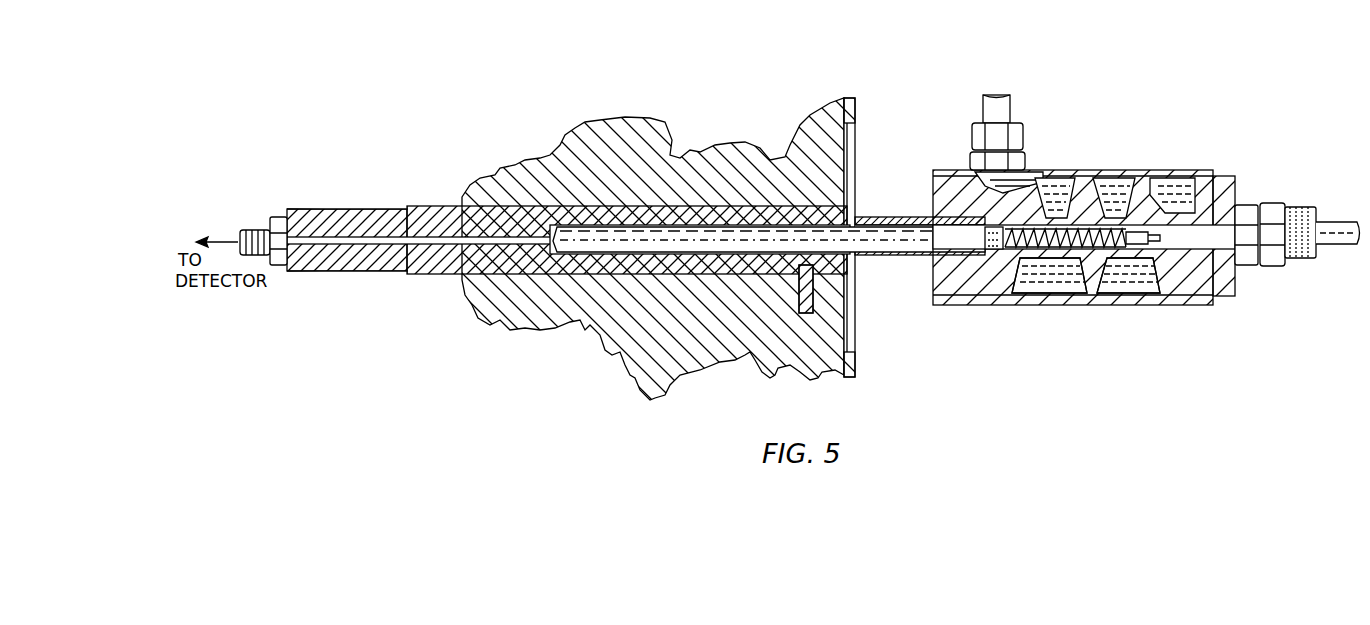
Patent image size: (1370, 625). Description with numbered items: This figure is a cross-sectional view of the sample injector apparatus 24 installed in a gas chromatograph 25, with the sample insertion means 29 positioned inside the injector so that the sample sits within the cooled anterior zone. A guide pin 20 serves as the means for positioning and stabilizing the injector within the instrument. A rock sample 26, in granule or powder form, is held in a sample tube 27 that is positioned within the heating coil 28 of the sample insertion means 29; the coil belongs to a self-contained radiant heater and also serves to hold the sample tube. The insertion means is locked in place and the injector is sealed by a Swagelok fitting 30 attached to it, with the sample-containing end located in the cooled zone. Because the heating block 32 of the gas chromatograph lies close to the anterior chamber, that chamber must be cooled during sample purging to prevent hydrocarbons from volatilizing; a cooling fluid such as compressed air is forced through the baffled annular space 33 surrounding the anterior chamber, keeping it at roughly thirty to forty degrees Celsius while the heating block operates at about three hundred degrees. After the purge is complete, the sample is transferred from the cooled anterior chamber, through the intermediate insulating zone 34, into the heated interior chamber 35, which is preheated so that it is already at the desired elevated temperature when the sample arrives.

The guide pin 20 is at (815, 291).
The injector apparatus 24 is at (1093, 304).
The gas chromatograph 25 is at (876, 108).
The rock sample 26 is at (1074, 236).
The sample tube 27 is at (1048, 250).
The heating coil 28 is at (1097, 236).
The sample insertion means 29 is at (1330, 225).
The Swagelok fitting 30 is at (1272, 207).
The heating block 32 is at (676, 138).
The annular space 33 is at (1142, 300).
The intermediate insulating zone 34 is at (889, 237).
The interior chamber 35 is at (627, 241).